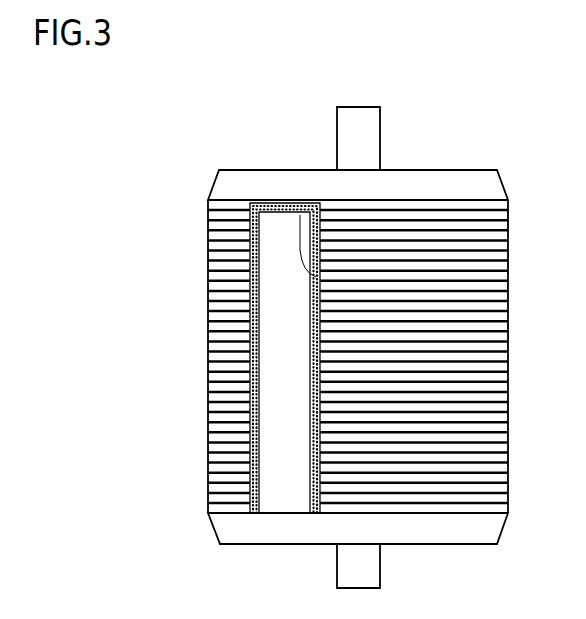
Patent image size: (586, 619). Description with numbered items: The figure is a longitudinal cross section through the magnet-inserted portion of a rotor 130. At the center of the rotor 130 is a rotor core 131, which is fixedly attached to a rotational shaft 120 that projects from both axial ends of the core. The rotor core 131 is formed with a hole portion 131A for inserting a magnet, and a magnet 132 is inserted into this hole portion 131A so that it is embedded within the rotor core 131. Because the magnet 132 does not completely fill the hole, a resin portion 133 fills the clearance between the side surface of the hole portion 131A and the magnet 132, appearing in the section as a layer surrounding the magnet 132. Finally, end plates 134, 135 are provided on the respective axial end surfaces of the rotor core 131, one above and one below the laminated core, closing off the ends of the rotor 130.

The rotational shaft 120 is at (357, 128).
The rotor 130 is at (144, 168).
The rotor core 131 is at (368, 410).
The hole portion 131A is at (302, 215).
The magnet 132 is at (277, 328).
The resin portion 133 is at (250, 238).
The end plate 134 is at (243, 188).
The end plate 135 is at (253, 533).